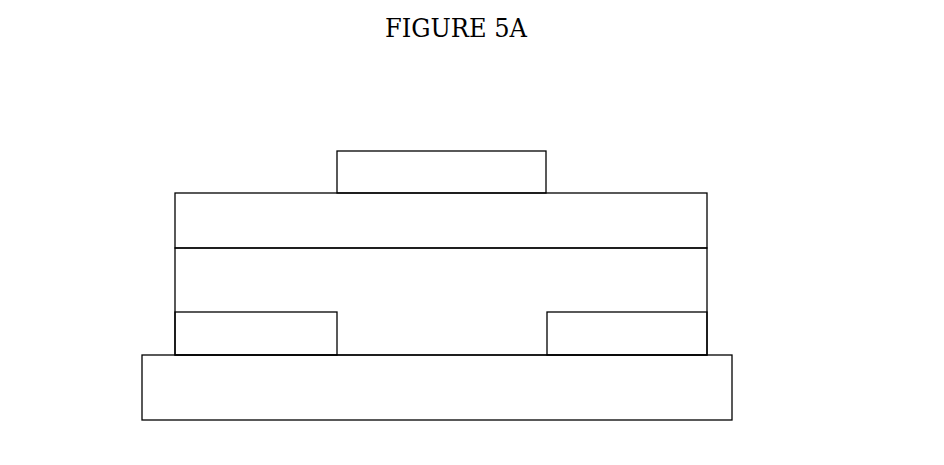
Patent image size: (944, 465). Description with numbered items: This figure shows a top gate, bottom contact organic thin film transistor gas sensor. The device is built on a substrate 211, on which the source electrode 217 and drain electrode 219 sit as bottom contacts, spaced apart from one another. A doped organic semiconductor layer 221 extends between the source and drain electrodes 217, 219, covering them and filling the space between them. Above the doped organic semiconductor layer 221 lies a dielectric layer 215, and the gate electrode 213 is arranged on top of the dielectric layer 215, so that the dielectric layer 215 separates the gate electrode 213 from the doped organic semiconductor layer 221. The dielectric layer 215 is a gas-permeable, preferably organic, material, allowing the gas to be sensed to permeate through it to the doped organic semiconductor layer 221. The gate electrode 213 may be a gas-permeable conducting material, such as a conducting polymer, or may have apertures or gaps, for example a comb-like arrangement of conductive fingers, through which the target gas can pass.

The substrate 211 is at (734, 382).
The gate electrode 213 is at (332, 160).
The dielectric layer 215 is at (709, 219).
The source electrode 217 is at (173, 340).
The drain electrode 219 is at (709, 333).
The doped organic semiconductor layer 221 is at (709, 280).